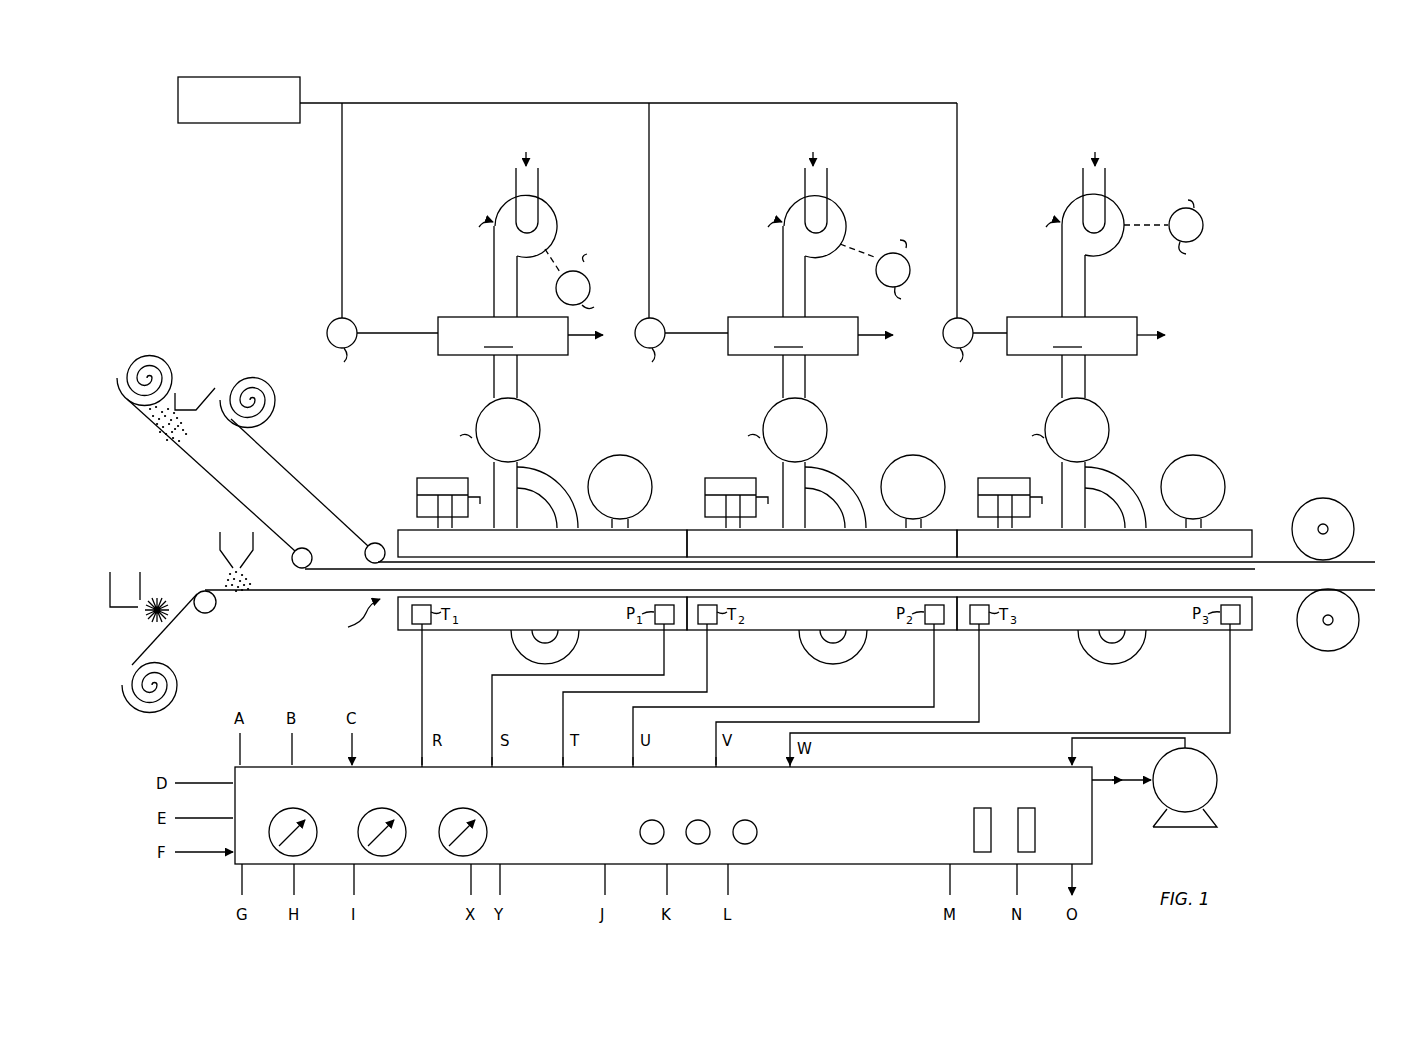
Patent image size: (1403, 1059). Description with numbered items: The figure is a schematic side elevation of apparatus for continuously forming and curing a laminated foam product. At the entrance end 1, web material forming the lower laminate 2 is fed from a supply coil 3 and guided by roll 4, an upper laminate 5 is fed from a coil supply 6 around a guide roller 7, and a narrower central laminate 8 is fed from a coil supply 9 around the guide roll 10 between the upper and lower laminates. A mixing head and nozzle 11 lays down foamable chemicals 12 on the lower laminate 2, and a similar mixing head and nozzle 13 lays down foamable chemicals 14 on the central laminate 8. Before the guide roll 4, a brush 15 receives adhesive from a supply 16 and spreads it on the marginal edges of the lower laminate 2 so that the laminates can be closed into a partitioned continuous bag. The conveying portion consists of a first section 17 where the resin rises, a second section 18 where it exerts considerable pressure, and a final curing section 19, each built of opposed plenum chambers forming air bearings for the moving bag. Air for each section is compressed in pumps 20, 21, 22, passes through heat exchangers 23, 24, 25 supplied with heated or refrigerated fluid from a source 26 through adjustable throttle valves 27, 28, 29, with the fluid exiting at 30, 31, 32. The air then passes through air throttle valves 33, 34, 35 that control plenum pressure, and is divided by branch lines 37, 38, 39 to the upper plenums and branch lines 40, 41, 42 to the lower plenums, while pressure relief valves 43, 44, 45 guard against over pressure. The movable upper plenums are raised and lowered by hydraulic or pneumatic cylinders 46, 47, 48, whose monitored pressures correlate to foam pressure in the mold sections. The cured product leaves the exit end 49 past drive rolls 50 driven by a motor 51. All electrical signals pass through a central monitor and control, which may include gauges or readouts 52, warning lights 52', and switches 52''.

The entrance end 1 is at (356, 618).
The lower laminate 2 is at (170, 630).
The supply coil 3 is at (168, 690).
The guide roll 4 is at (212, 612).
The upper laminate 5 is at (297, 470).
The coil supply 6 is at (272, 402).
The guide roller 7 is at (377, 542).
The central laminate 8 is at (214, 470).
The coil supply 9 is at (150, 348).
The guide roll 10 is at (309, 535).
The mixing head and nozzle 11 is at (230, 526).
The foamable chemicals 12 is at (230, 576).
The mixing head and nozzle 13 is at (204, 384).
The foamable chemicals 14 is at (184, 435).
The brush 15 is at (150, 616).
The adhesive supply 16 is at (121, 552).
The first section 17 is at (476, 627).
The second section 18 is at (778, 627).
The final curing section 19 is at (1057, 627).
The pump 20 is at (553, 235).
The pump 21 is at (838, 232).
The pump 22 is at (1122, 218).
The heat exchanger 23 is at (503, 357).
The heat exchanger 24 is at (793, 357).
The heat exchanger 25 is at (1072, 357).
The source of heated or refrigerated fluid 26 is at (300, 82).
The adjustable throttle valve 27 is at (352, 323).
The adjustable throttle valve 28 is at (660, 323).
The adjustable throttle valve 29 is at (968, 323).
The heat exchange fluid exit 30 is at (590, 345).
The heat exchange fluid exit 31 is at (880, 345).
The heat exchange fluid exit 32 is at (1155, 345).
The air throttle valve 33 is at (538, 440).
The air throttle valve 34 is at (826, 440).
The air throttle valve 35 is at (1108, 440).
The branch line 37 is at (560, 482).
The branch line 38 is at (849, 482).
The branch line 39 is at (1129, 482).
The branch line 40 is at (572, 650).
The branch line 41 is at (858, 655).
The branch line 42 is at (1112, 664).
The pressure relief valve 43 is at (640, 458).
The pressure relief valve 44 is at (932, 458).
The pressure relief valve 45 is at (1212, 458).
The hydraulic or pneumatic cylinder 46 is at (410, 488).
The hydraulic or pneumatic cylinder 47 is at (698, 488).
The hydraulic or pneumatic cylinder 48 is at (971, 488).
The exit end 49 is at (1254, 514).
The drive rolls 50 is at (1302, 513).
The motor 51 is at (1212, 790).
The gauges or readouts 52 is at (663, 815).
The warning lights 52' is at (698, 817).
The switches 52'' is at (1004, 818).